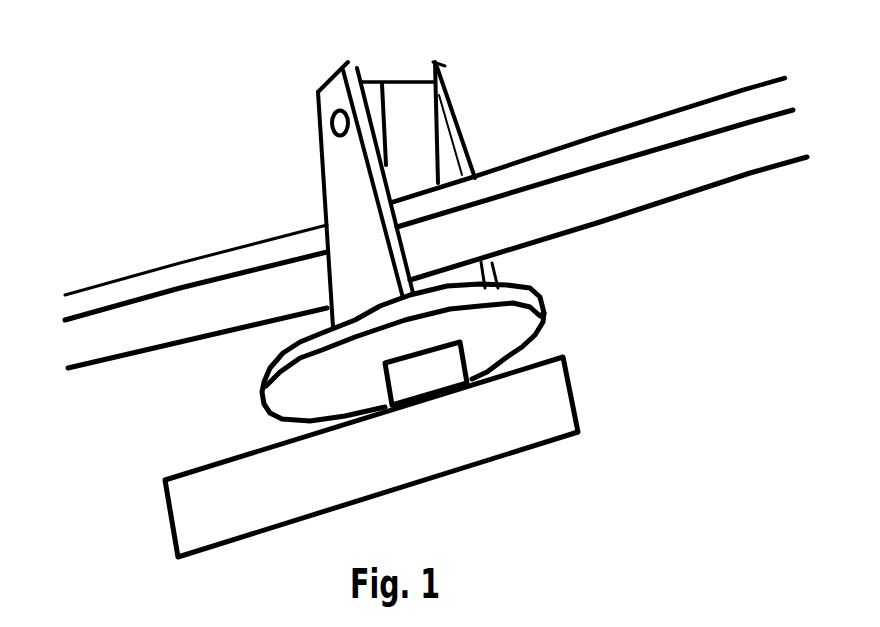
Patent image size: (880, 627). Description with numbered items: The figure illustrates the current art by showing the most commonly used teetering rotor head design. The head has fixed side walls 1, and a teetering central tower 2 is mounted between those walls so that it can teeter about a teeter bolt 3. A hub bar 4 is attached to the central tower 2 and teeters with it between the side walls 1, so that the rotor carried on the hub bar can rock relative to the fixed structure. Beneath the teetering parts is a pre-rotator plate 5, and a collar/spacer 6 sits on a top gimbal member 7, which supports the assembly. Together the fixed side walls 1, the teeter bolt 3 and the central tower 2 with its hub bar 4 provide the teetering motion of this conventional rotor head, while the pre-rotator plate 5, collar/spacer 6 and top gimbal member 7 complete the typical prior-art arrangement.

The fixed side walls 1 is at (352, 243).
The teetering central tower 2 is at (403, 113).
The teeter bolt 3 is at (343, 122).
The hub bar 4 is at (473, 193).
The pre-rotator plate 5 is at (492, 330).
The collar/spacer 6 is at (432, 367).
The top gimbal member 7 is at (537, 393).